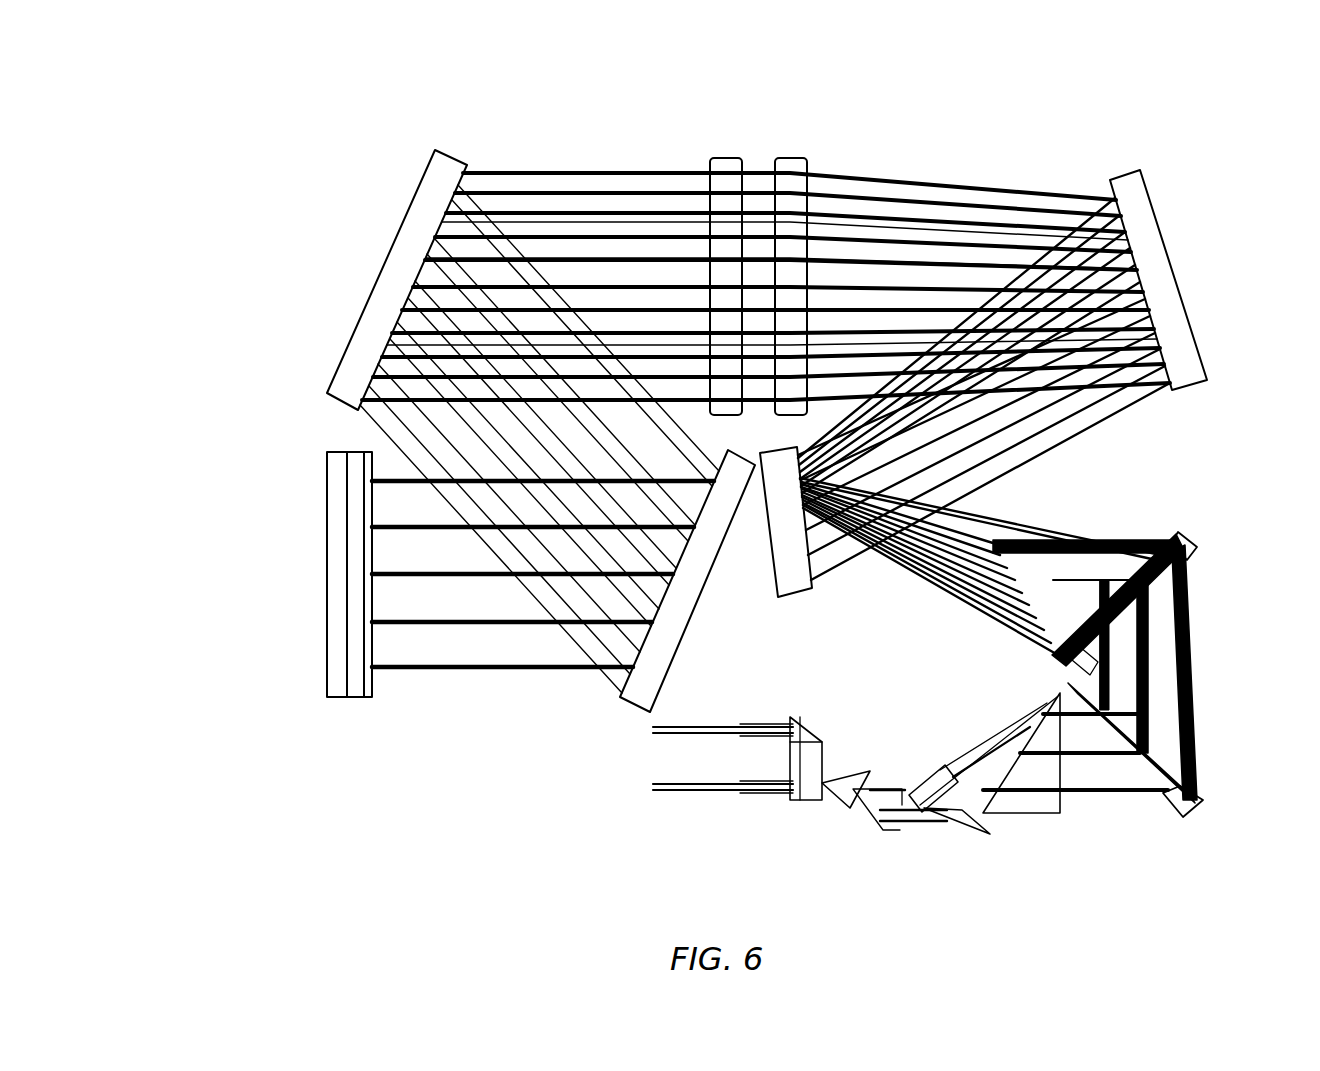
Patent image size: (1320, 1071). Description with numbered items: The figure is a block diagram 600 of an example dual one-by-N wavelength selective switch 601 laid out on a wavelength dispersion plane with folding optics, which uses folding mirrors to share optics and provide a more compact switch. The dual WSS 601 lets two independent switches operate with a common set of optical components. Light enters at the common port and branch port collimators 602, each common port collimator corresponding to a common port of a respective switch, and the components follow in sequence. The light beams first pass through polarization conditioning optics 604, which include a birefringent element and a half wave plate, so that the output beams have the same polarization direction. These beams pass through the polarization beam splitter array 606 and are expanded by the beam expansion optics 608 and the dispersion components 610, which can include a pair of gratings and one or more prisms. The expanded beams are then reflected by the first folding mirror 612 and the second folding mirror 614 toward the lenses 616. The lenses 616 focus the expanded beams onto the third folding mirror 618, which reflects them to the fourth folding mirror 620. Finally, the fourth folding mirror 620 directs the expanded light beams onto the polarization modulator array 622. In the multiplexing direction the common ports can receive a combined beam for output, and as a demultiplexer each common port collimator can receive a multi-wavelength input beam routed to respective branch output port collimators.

The block diagram 600 is at (249, 104).
The dual 1×N WSS 601 is at (416, 818).
The common port and branch port collimators 602 is at (632, 756).
The polarization conditioning optics 604 is at (762, 812).
The polarization beam splitter array 606 is at (841, 733).
The beam expansion optics 608 is at (1212, 850).
The dispersion components 610 is at (1118, 500).
The first folding mirror 612 is at (820, 599).
The second folding mirror 614 is at (1174, 219).
The lenses 616 is at (757, 148).
The third folding mirror 618 is at (342, 259).
The fourth folding mirror 620 is at (712, 591).
The polarization modulator array 622 is at (309, 492).